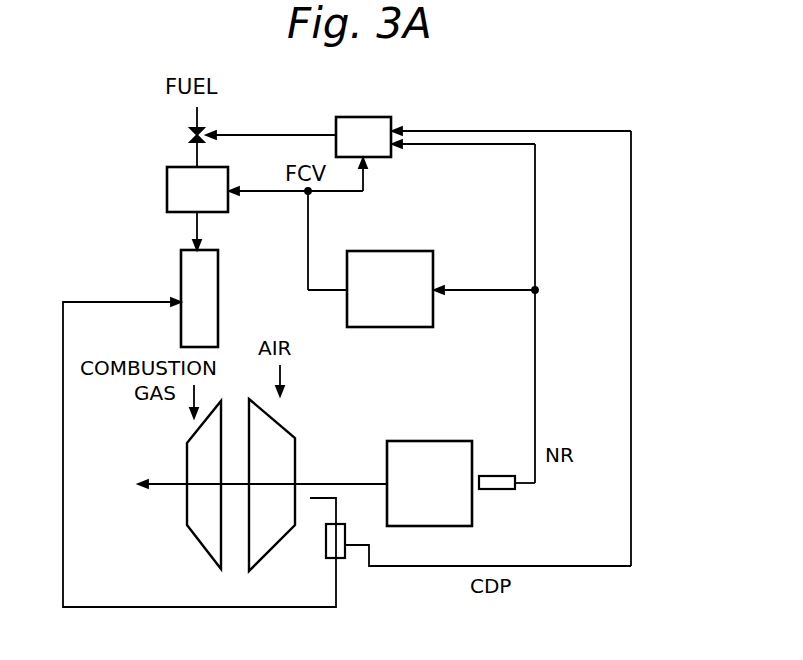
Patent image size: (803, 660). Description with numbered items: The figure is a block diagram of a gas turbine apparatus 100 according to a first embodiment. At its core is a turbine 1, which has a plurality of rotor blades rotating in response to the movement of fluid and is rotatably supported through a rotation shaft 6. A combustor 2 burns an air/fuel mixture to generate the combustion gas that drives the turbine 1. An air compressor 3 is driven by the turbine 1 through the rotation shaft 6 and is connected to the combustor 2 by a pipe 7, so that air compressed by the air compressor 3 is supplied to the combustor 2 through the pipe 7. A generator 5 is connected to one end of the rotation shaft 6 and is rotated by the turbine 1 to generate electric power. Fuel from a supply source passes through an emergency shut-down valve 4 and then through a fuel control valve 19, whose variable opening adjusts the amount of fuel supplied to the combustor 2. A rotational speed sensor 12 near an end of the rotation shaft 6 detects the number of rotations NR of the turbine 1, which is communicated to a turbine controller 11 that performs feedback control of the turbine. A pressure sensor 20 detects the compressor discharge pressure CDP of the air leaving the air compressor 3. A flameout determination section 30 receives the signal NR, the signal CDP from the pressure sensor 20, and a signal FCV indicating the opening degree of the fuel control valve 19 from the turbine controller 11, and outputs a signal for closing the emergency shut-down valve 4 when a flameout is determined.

The turbine 1 is at (199, 547).
The combustor 2 is at (218, 297).
The air compressor 3 is at (268, 548).
The emergency shut-down valve 4 is at (190, 133).
The generator 5 is at (430, 441).
The rotation shaft 6 is at (345, 483).
The pipe 7 is at (338, 578).
The turbine controller 11 is at (396, 250).
The rotational speed sensor 12 is at (495, 490).
The fuel control valve 19 is at (167, 190).
The pressure sensor 20 is at (346, 533).
The flameout determination section 30 is at (392, 120).
The gas turbine apparatus 100 is at (522, 655).